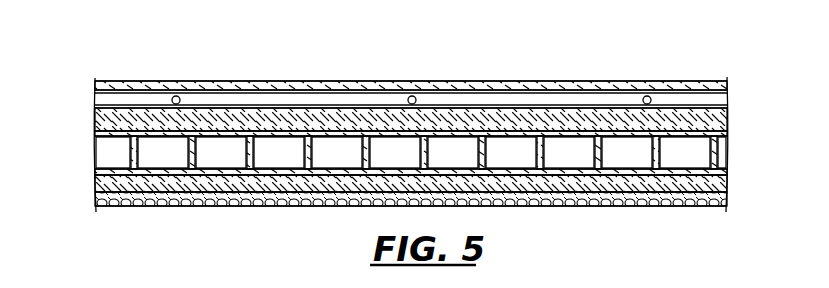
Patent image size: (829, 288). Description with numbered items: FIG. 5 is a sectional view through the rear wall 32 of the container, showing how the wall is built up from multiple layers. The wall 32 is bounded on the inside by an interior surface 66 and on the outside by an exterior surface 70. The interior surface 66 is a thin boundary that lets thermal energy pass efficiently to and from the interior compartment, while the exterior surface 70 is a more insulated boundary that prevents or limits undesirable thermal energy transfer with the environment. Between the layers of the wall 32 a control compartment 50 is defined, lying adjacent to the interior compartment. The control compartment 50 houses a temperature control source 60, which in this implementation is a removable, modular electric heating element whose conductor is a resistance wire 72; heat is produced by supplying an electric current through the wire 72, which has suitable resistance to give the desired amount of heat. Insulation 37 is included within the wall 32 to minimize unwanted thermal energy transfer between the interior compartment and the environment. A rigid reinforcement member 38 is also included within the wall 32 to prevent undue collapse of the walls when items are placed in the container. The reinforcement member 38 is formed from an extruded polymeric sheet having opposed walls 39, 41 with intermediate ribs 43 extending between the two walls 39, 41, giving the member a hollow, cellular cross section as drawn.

The rear wall 32 is at (678, 59).
The insulation 37 is at (718, 123).
The reinforcement member 38 is at (393, 152).
The opposed wall of reinforcement member 39 is at (112, 133).
The opposed wall of reinforcement member 41 is at (107, 167).
The intermediate rib 43 is at (188, 152).
The control compartment 50 is at (412, 81).
The temperature control source 60 is at (94, 99).
The interior surface 66 is at (483, 88).
The exterior surface 70 is at (593, 204).
The resistance wire 72 is at (179, 97).